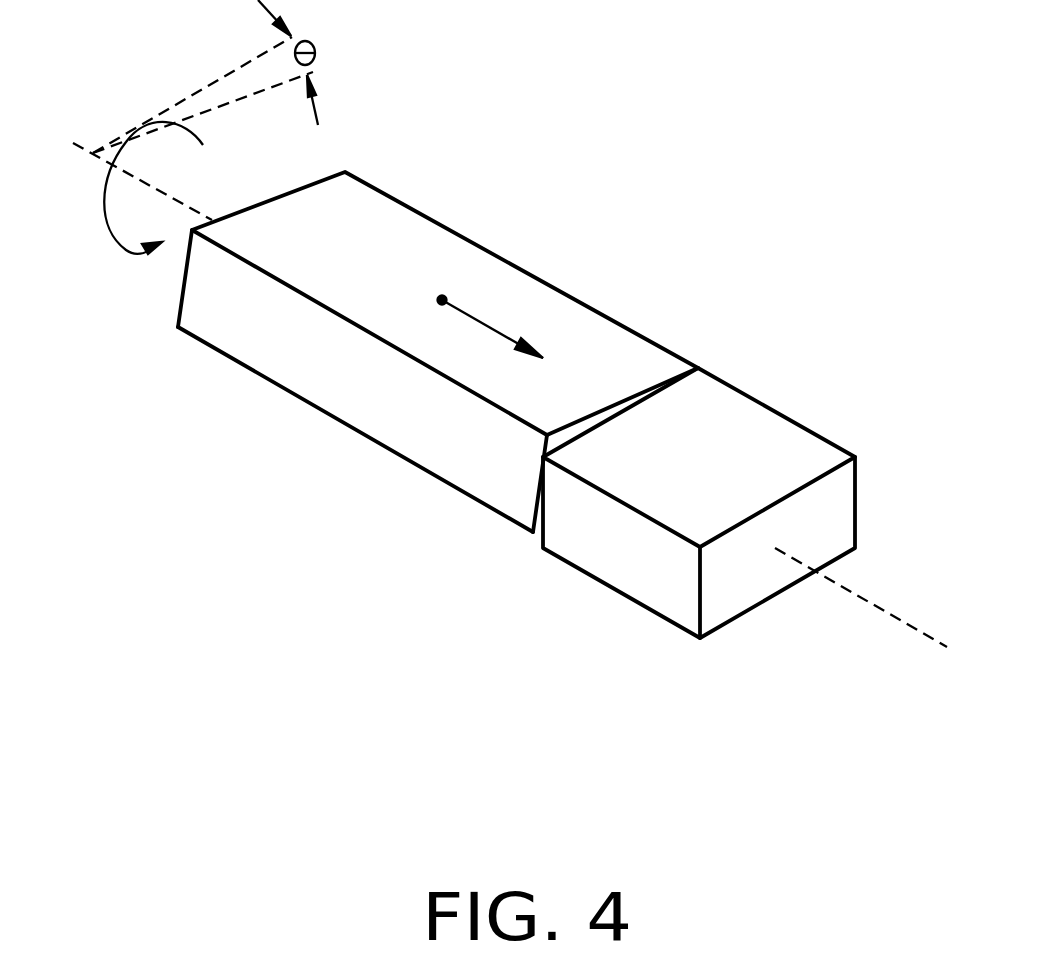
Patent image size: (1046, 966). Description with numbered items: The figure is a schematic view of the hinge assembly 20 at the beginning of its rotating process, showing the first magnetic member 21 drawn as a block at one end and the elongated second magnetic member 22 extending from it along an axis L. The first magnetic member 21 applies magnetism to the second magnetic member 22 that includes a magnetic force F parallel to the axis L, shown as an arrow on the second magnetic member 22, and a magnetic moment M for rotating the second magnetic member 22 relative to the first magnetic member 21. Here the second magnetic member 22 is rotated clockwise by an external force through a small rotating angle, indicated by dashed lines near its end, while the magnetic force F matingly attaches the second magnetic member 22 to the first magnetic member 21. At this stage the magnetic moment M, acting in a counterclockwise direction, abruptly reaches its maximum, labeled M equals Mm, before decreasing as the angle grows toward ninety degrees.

The hinge assembly 20 is at (497, 323).
The first magnetic member 21 is at (732, 442).
The second magnetic member 22 is at (512, 305).